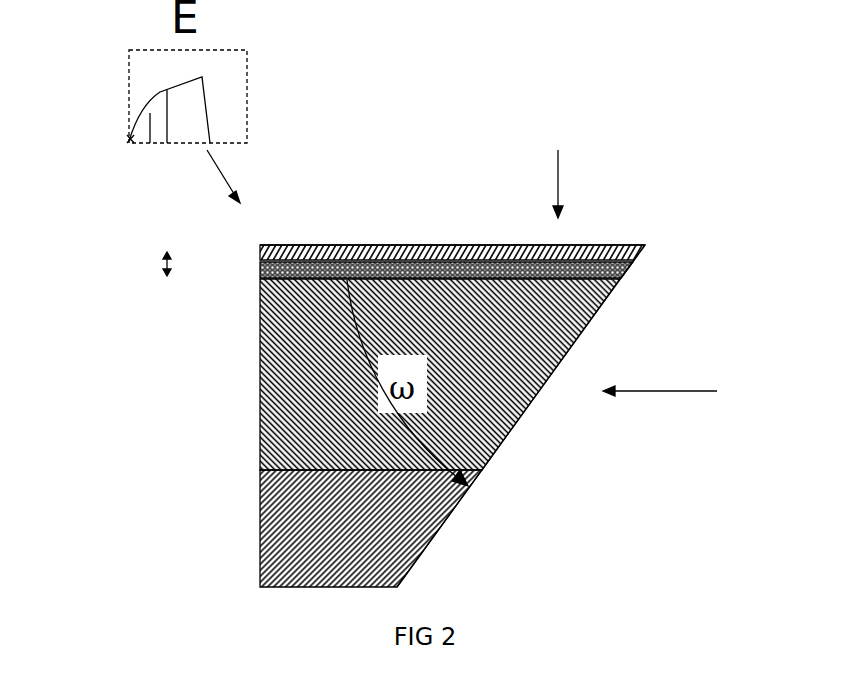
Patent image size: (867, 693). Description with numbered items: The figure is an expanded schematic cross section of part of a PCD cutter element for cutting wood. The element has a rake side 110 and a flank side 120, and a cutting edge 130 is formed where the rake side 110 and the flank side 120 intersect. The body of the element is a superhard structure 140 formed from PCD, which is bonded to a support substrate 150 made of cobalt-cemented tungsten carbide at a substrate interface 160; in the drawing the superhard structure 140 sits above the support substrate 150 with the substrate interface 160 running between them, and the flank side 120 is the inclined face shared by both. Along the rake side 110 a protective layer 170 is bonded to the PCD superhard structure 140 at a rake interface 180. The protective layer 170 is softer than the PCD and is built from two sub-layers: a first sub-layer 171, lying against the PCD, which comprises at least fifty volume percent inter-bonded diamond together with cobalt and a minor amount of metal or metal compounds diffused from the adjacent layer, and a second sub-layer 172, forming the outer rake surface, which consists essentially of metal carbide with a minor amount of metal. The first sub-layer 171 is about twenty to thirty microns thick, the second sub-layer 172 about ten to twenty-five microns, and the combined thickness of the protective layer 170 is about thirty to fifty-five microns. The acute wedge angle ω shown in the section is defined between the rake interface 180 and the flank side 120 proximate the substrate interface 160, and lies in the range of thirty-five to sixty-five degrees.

The rake side 110 is at (558, 170).
The flank side 120 is at (681, 390).
The cutting edge 130 is at (645, 245).
The superhard structure 140 is at (260, 402).
The support substrate 150 is at (260, 534).
The substrate interface 160 is at (487, 470).
The protective layer 170 is at (118, 185).
The first sub-layer 171 is at (260, 272).
The second sub-layer 172 is at (260, 252).
The rake interface 180 is at (619, 281).